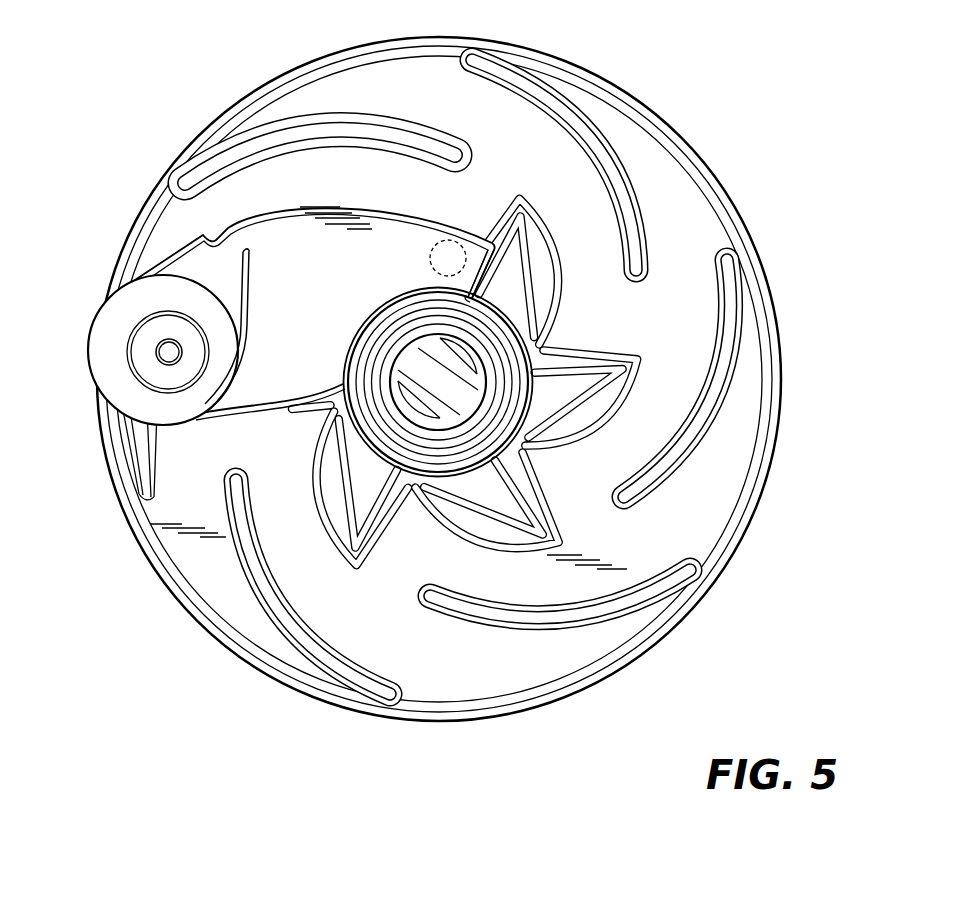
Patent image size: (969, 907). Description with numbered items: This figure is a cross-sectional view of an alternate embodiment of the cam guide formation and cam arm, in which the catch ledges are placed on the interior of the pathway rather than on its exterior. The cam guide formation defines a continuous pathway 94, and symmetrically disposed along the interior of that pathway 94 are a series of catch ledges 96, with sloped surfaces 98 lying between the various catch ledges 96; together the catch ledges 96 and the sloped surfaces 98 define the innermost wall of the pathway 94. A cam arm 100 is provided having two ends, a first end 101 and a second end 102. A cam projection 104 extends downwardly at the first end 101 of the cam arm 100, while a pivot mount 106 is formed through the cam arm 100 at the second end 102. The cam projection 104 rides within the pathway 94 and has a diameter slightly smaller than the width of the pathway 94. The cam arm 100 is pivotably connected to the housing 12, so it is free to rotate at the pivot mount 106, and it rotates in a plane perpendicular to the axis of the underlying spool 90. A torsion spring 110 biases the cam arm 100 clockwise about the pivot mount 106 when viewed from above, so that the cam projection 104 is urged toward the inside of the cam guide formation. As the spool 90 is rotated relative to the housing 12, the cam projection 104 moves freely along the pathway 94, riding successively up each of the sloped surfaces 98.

The housing 12 is at (281, 76).
The spool 90 is at (723, 220).
The pathway 94 is at (643, 420).
The catch ledges 96 is at (547, 500).
The sloped surfaces 98 is at (470, 523).
The cam arm 100 is at (277, 233).
The first end 101 is at (483, 280).
The second end 102 is at (248, 396).
The cam projection 104 is at (443, 240).
The pivot mount 106 is at (156, 353).
The torsion spring 110 is at (237, 263).